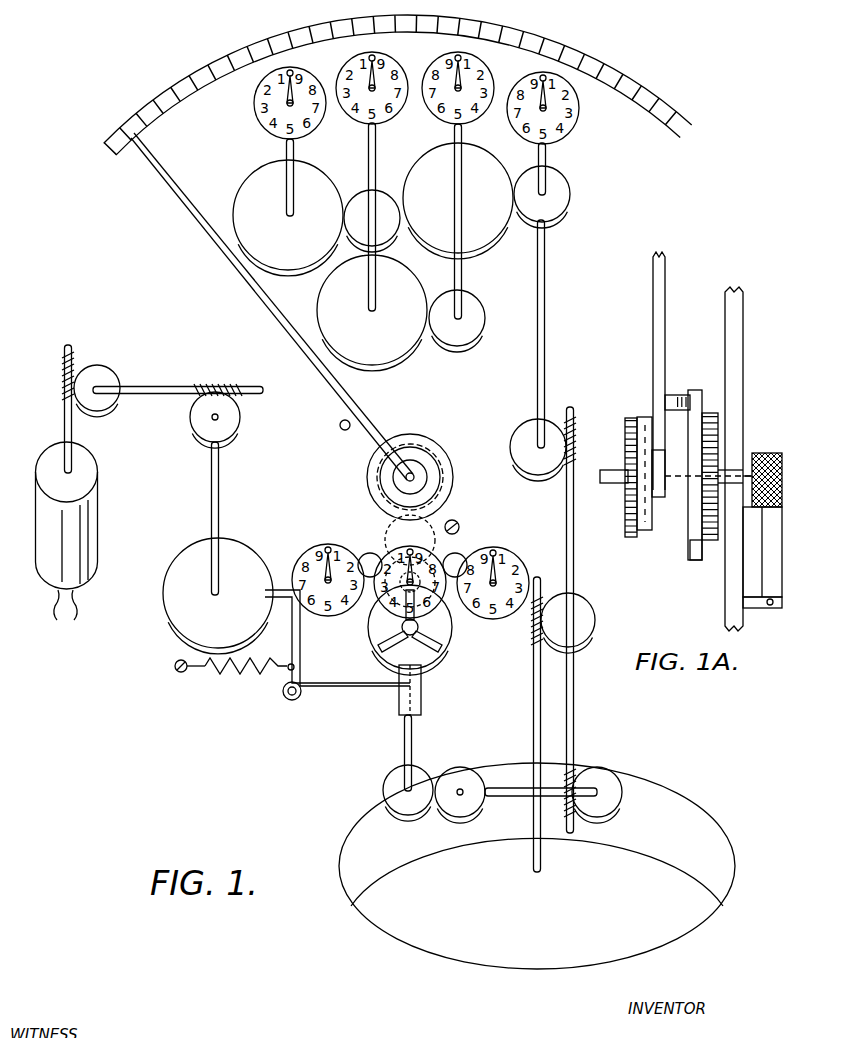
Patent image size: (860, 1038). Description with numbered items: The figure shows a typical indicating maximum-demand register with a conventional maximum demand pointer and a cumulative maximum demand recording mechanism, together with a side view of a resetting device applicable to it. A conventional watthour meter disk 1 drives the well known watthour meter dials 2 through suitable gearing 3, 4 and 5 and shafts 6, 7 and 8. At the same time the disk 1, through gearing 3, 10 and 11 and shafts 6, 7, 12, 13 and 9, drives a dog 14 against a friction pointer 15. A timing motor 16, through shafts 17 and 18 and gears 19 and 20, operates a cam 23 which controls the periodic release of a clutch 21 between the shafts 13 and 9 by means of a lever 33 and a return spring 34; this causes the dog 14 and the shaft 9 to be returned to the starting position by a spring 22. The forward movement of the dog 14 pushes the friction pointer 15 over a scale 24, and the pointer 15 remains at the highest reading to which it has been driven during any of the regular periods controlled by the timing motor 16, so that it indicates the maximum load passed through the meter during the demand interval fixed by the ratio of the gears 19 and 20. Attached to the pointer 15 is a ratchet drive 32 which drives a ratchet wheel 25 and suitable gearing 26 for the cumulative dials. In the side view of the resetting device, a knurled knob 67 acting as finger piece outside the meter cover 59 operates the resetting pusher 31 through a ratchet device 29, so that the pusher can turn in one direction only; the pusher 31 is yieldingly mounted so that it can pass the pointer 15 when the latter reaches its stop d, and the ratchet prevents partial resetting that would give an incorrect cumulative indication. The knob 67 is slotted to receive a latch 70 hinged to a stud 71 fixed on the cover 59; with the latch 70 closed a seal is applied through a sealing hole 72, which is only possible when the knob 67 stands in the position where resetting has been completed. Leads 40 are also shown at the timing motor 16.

In FIG. 1, the watthour meter disk 1 is at (664, 792).
In FIG. 1, the watthour meter dials 2 is at (352, 122).
In FIG. 1, the gearing 3 is at (548, 650).
In FIG. 1, the gearing 4 is at (562, 471).
In FIG. 1, the gearing 5 is at (478, 228).
In FIG. 1, the shaft 6 is at (533, 690).
In FIG. 1, the shaft 7 is at (566, 547).
In FIG. 1, the shaft 8 is at (546, 340).
In FIG. 1, the shaft 9 is at (392, 531).
In FIG. 1, the gearing 10 is at (582, 770).
In FIG. 1, the gearing 11 is at (440, 808).
In FIG. 1, the shaft 12 is at (508, 788).
In FIG. 1, the shaft 13 is at (405, 738).
In FIG. 1, the dog 14 is at (380, 441).
In FIG. 1A, the dog 14 is at (659, 430).
In FIG. 1, the friction pointer 15 is at (243, 272).
In FIG. 1A, the friction pointer 15 is at (664, 333).
In FIG. 1, the timing motor 16 is at (106, 521).
In FIG. 1, the shaft 17 is at (62, 421).
In FIG. 1, the shaft 18 is at (150, 385).
In FIG. 1, the gear 19 is at (75, 372).
In FIG. 1, the gear 20 is at (196, 402).
In FIG. 1, the clutch 21 is at (440, 650).
In FIG. 1, the spring 22 is at (452, 520).
In FIG. 1, the cam 23 is at (167, 594).
In FIG. 1, the scale 24 is at (480, 29).
In FIG. 1, the ratchet wheel 25 is at (390, 486).
In FIG. 1A, the ratchet wheel 25 is at (650, 520).
In FIG. 1, the gearing 26 is at (368, 556).
In FIG. 1A, the gearing 26 is at (630, 537).
In FIG. 1A, the ratchet device 29 is at (712, 440).
In FIG. 1A, the resetting pusher 31 is at (677, 395).
In FIG. 1, the ratchet drive 32 is at (383, 465).
In FIG. 1A, the ratchet drive 32 is at (644, 417).
In FIG. 1, the lever 33 is at (299, 648).
In FIG. 1, the return spring 34 is at (229, 672).
In FIG. 1, the wires 40 is at (66, 615).
In FIG. 1A, the meter cover 59 is at (743, 310).
In FIG. 1A, the knurled knob 67 is at (763, 453).
In FIG. 1A, the latch 70 is at (766, 560).
In FIG. 1A, the stud 71 is at (752, 611).
In FIG. 1A, the sealing hole 72 is at (782, 453).
In FIG. 1, the stop d is at (340, 426).